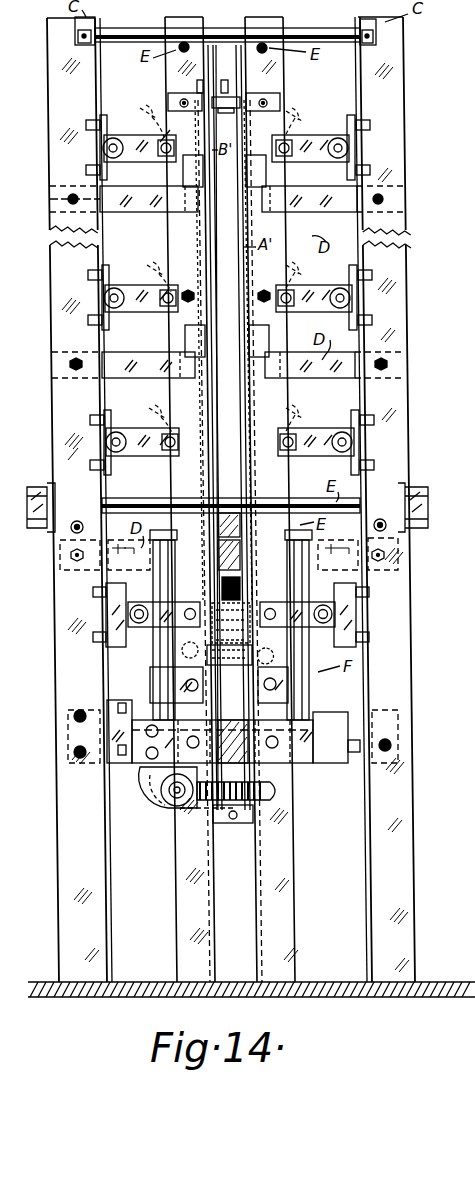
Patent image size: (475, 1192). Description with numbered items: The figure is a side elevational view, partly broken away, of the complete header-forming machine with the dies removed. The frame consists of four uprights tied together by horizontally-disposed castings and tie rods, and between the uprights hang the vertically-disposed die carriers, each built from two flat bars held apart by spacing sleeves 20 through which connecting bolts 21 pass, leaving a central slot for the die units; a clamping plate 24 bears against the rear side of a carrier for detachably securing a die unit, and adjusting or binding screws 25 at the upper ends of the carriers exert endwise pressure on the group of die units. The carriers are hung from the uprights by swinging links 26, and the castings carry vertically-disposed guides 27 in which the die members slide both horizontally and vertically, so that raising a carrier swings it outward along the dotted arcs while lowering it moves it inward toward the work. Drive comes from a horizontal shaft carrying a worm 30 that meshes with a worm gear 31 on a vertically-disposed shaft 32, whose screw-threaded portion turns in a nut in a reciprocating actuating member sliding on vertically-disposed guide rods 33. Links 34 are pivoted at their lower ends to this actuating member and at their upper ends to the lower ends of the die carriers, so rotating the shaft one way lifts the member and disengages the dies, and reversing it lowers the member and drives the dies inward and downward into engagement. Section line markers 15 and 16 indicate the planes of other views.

The section line 15- 15 is at (82, 112).
The section line 16- 16 is at (78, 472).
The spacing sleeves 20 is at (226, 288).
The connecting bolts 21 is at (200, 285).
The clamping plate 24 is at (200, 452).
The adjusting screws 25 is at (228, 80).
The swinging links 26 is at (310, 152).
The vertically-disposed guides 27 is at (160, 335).
The worm 30 is at (167, 810).
The worm gear 31 is at (232, 824).
The vertically-disposed shaft 32 is at (260, 578).
The guide rods 33 is at (160, 661).
The links 34 is at (176, 681).